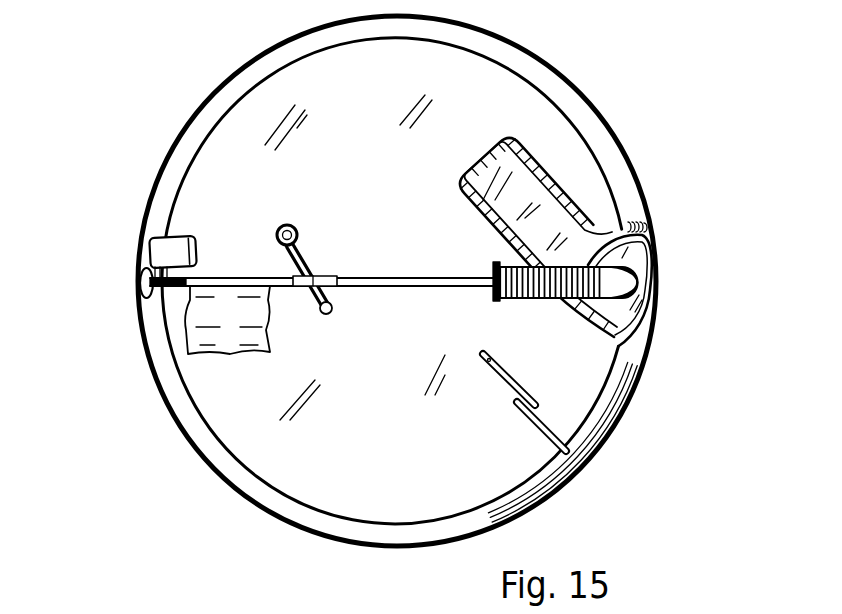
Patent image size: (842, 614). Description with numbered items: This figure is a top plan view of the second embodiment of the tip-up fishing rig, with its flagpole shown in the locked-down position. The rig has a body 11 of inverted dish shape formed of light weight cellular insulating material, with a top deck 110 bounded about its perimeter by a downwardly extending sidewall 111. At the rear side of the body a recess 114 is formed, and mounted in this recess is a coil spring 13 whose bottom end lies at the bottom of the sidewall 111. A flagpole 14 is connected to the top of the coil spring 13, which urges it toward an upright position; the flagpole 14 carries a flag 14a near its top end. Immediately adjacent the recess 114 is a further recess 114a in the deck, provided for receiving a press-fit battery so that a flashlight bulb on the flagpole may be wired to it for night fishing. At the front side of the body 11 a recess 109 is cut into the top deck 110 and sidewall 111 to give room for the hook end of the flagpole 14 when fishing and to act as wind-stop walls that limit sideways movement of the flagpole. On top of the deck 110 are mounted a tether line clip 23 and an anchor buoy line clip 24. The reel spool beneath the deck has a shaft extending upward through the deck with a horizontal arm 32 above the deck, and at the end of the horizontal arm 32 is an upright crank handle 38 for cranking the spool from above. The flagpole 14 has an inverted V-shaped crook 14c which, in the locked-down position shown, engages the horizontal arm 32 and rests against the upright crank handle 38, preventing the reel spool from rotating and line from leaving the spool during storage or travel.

The body 11 is at (640, 107).
The coil spring 13 is at (648, 228).
The flagpole 14 is at (458, 277).
The flag 14a is at (213, 333).
The inverted V-shaped crook 14c is at (328, 277).
The tether line clip 23 is at (540, 427).
The anchor buoy line clip 24 is at (497, 376).
The horizontal arm 32 is at (342, 203).
The upright crank handle 38 is at (331, 314).
The recess 109 is at (155, 252).
The top deck 110 is at (275, 110).
The sidewall 111 is at (540, 77).
The recess 114 is at (640, 310).
The recess 114a is at (560, 220).